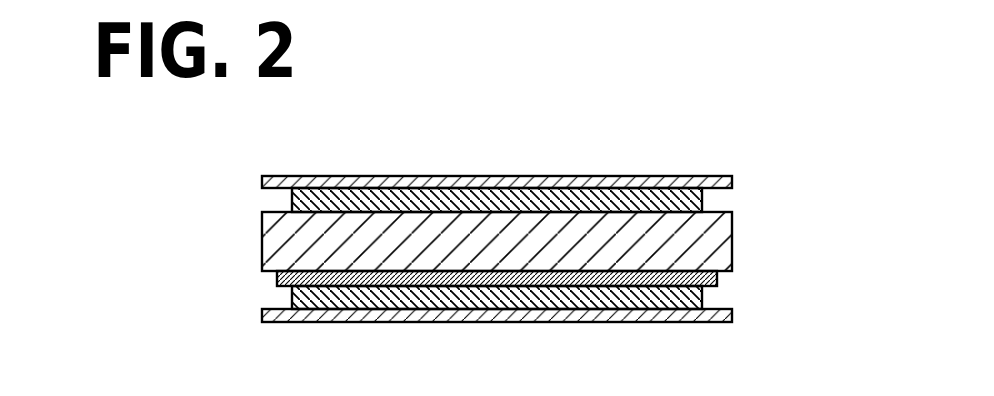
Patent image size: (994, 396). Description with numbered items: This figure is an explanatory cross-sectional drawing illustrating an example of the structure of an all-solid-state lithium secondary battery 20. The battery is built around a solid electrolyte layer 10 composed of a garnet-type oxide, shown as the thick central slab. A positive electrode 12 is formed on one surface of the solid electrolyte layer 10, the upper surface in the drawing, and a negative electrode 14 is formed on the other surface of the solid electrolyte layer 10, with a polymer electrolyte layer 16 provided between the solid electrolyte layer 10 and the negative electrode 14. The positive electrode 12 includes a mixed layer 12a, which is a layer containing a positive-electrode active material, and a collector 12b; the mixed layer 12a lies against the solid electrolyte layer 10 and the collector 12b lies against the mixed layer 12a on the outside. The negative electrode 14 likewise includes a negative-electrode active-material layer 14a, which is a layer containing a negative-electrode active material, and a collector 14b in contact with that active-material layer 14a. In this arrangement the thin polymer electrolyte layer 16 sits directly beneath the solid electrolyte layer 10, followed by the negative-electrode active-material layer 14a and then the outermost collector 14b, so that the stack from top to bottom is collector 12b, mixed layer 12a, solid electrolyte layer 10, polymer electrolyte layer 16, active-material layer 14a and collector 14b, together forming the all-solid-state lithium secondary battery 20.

The all-solid-state lithium secondary battery 20 is at (714, 160).
The solid electrolyte layer 10 is at (722, 243).
The positive electrode 12 is at (810, 168).
The mixed layer 12a is at (694, 203).
The collector 12b is at (728, 183).
The negative electrode 14 is at (810, 292).
The negative-electrode active-material layer 14a is at (696, 292).
The collector 14b is at (732, 313).
The polymer electrolyte layer 16 is at (718, 275).